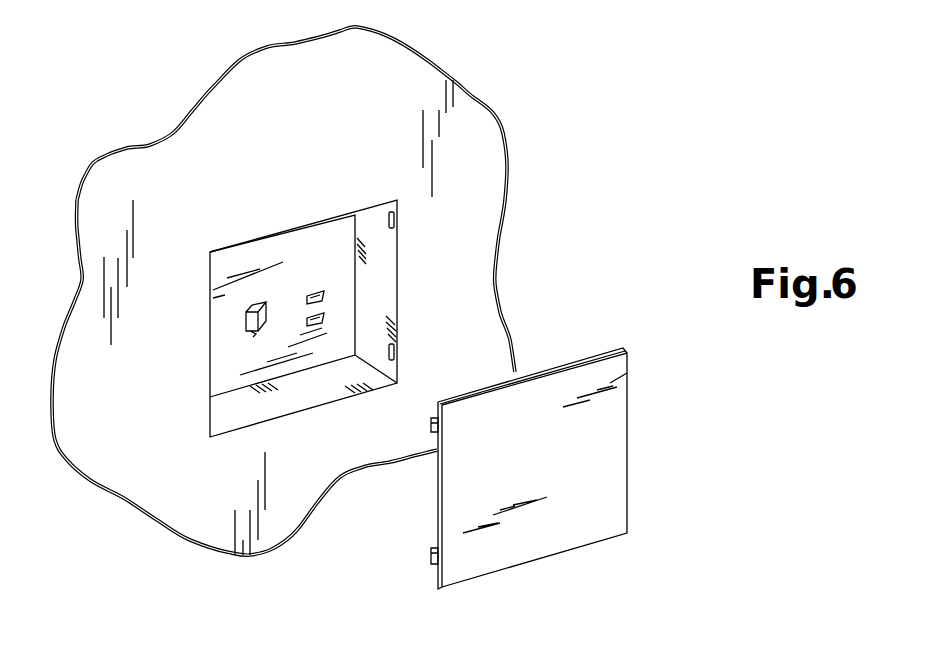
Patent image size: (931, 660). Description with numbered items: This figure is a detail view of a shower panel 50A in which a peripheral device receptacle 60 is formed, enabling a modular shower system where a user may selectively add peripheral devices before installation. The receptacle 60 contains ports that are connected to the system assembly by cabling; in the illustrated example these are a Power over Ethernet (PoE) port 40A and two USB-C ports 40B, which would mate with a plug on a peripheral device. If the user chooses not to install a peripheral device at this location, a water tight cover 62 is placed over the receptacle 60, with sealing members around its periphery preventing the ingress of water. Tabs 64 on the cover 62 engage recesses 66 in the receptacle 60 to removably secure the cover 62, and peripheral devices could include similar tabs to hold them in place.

The shower panel 50A is at (392, 75).
The peripheral device receptacle 60 is at (282, 243).
The Power over Ethernet (PoE) port 40A is at (248, 327).
The USB-C ports 40B is at (320, 322).
The recesses 66 is at (397, 222).
The water tight cover 62 is at (590, 453).
The tabs 64 is at (431, 425).